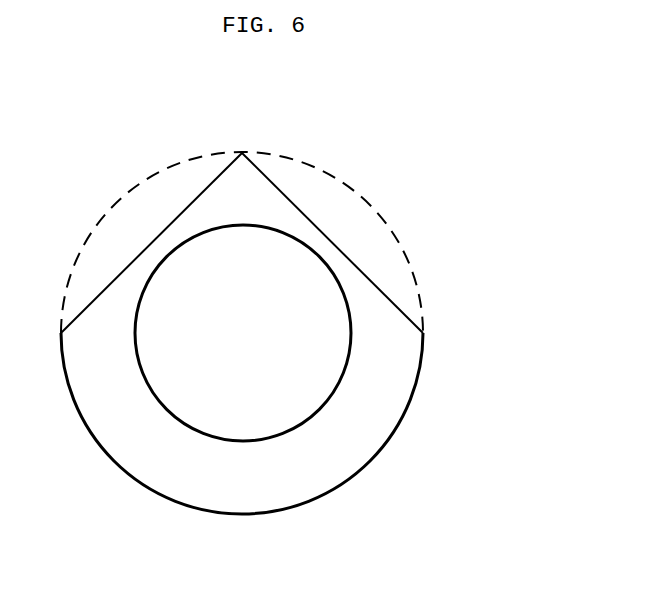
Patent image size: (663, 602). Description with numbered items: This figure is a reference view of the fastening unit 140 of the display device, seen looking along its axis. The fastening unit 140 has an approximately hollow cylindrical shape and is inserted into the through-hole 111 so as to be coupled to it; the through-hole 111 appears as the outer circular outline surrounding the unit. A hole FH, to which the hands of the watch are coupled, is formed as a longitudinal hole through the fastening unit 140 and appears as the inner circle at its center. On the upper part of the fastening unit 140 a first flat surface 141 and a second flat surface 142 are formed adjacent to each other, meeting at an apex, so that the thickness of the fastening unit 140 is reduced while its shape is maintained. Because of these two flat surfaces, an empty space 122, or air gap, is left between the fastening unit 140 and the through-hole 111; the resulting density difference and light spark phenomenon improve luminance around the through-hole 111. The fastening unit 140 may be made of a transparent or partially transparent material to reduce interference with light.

The through-hole 111 is at (427, 248).
The empty space 122 is at (242, 213).
The fastening unit 140 is at (300, 477).
The first flat surface 141 is at (152, 242).
The second flat surface 142 is at (335, 245).
The hole FH is at (298, 346).